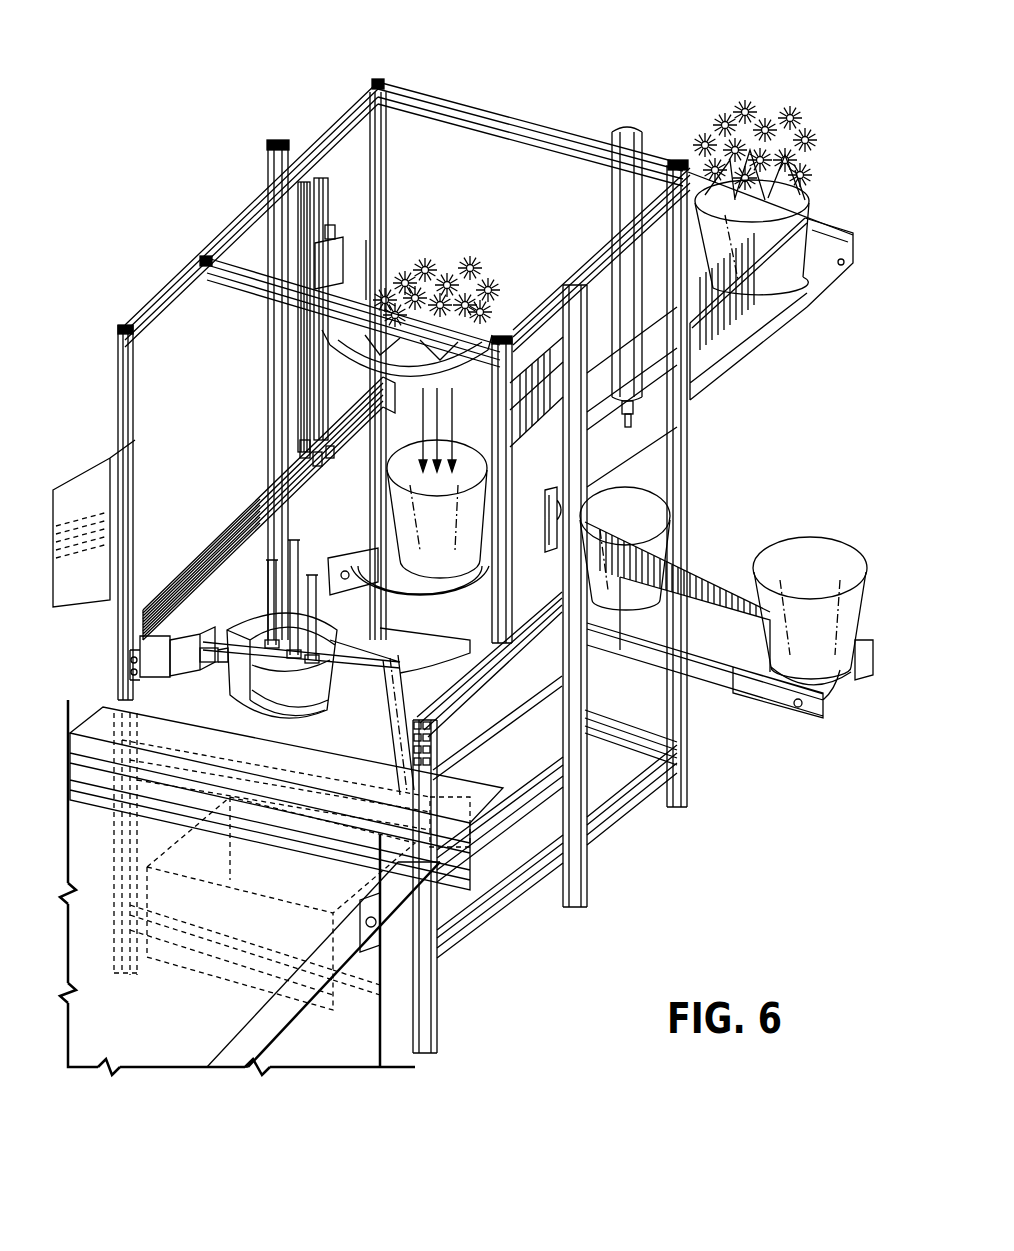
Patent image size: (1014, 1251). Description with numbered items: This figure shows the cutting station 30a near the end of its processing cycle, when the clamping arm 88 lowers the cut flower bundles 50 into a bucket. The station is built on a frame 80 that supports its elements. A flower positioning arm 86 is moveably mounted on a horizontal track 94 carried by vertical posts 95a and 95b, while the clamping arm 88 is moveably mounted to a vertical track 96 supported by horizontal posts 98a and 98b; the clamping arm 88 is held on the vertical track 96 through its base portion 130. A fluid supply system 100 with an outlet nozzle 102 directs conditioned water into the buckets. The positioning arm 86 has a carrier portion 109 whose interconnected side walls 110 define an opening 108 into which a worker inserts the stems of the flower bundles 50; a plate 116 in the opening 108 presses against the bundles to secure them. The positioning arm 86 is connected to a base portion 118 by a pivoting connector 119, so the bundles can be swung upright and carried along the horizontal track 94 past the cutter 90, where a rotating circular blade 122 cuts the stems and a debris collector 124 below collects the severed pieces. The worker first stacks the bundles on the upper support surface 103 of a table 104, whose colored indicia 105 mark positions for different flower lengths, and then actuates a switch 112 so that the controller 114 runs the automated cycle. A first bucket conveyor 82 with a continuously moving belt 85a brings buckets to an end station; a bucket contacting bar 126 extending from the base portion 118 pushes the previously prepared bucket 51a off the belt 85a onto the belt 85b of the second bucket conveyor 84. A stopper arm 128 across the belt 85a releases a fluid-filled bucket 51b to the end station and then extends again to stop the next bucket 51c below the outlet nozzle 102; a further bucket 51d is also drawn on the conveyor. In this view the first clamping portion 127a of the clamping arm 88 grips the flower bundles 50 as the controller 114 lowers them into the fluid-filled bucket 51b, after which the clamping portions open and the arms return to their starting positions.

The cutting station 30a is at (215, 86).
The frame 80 is at (537, 115).
The vertical post 95a is at (122, 422).
The vertical post 95b is at (272, 165).
The vertical track 96 is at (325, 235).
The base portion 130 is at (374, 240).
The flower bundles 50 is at (455, 258).
The fluid supply system 100 is at (622, 190).
The belt 85b is at (815, 243).
The bucket 51a is at (733, 245).
The second bucket conveyor 84 is at (778, 350).
The outlet nozzle 102 is at (690, 403).
The first clamping portion 127a is at (392, 352).
The horizontal post 98a is at (228, 310).
The horizontal post 98b is at (222, 522).
The clamping arm 88 is at (228, 447).
The horizontal track 94 is at (200, 590).
The controller 114 is at (83, 482).
The base portion 118 is at (185, 645).
The pivoting connector 119 is at (223, 660).
The flower positioning arm 86 is at (174, 680).
The side walls 110 is at (240, 648).
The plate 116 is at (312, 663).
The rotating circular blade 122 is at (358, 650).
The carrier portion 109 is at (340, 696).
The opening 108 is at (300, 695).
The bucket 51b is at (380, 550).
The bucket contacting bar 126 is at (468, 598).
The stopper arm 128 is at (548, 525).
The bucket 51c is at (665, 535).
The container 51d is at (854, 612).
The first bucket conveyor 82 is at (745, 718).
The belt 85a is at (833, 680).
The cutter 90 is at (413, 704).
The indicia 105 is at (318, 848).
The debris collector 124 is at (170, 884).
The upper support surface 103 is at (149, 1018).
The table 104 is at (270, 1027).
The switch 112 is at (380, 923).